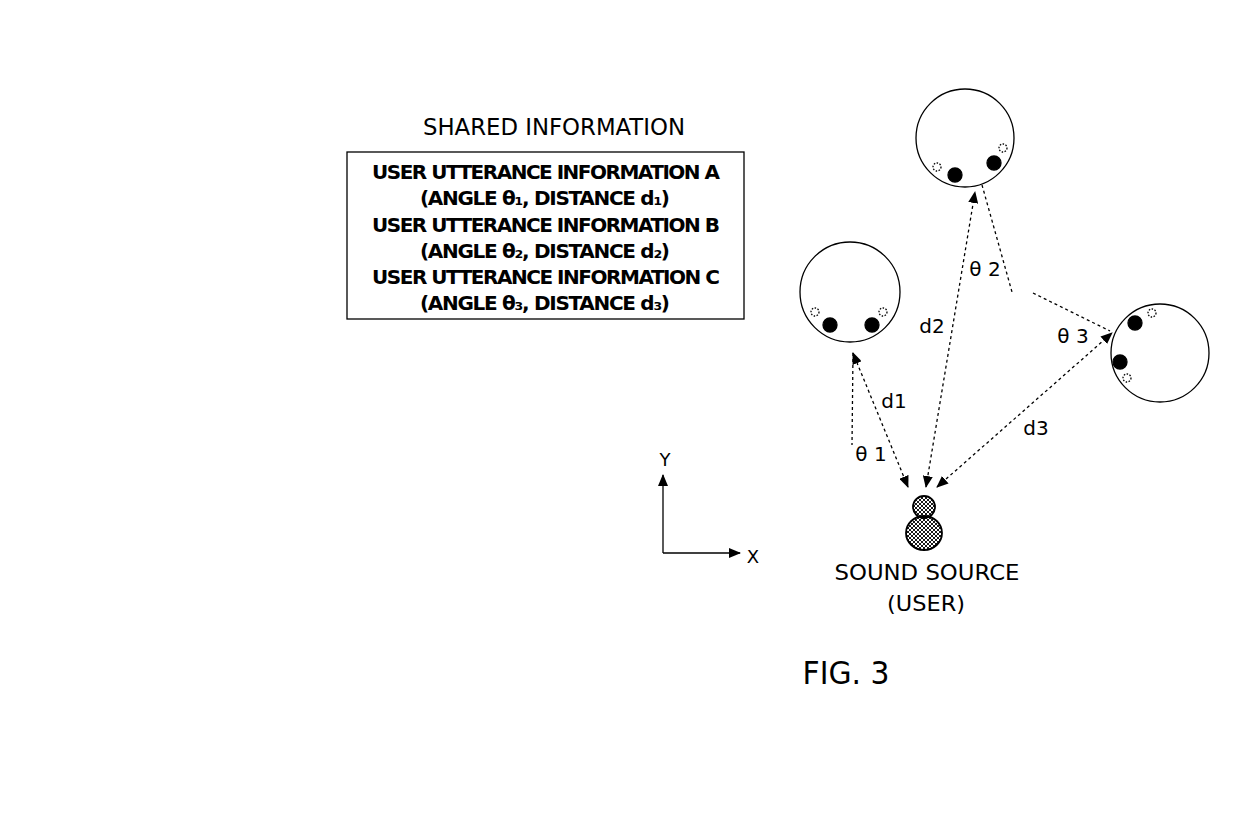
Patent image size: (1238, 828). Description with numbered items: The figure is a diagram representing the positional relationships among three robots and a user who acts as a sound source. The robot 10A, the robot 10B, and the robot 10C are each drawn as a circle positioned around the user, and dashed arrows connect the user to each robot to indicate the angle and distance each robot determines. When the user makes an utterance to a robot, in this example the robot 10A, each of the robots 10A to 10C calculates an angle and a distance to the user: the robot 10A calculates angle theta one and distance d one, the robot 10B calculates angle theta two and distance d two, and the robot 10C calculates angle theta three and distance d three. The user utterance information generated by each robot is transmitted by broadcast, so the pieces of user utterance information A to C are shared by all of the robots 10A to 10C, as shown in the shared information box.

The robot 10A is at (846, 276).
The robot 10B is at (972, 121).
The robot 10C is at (1167, 336).